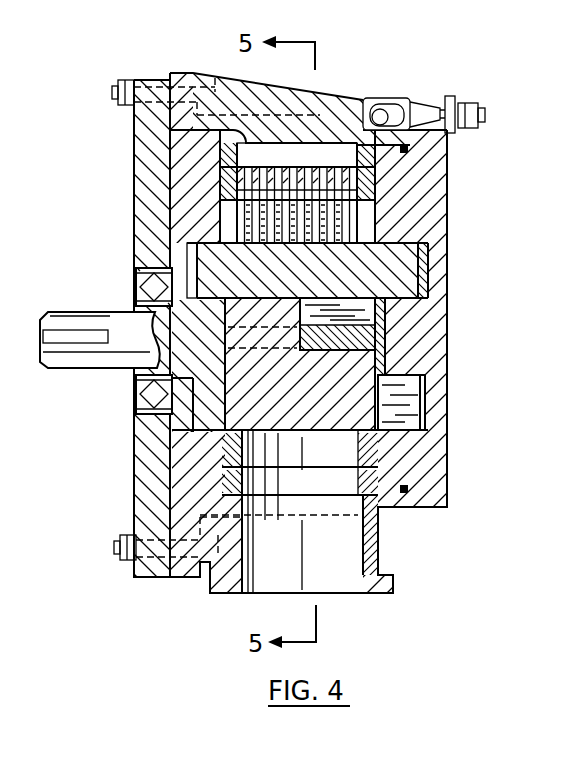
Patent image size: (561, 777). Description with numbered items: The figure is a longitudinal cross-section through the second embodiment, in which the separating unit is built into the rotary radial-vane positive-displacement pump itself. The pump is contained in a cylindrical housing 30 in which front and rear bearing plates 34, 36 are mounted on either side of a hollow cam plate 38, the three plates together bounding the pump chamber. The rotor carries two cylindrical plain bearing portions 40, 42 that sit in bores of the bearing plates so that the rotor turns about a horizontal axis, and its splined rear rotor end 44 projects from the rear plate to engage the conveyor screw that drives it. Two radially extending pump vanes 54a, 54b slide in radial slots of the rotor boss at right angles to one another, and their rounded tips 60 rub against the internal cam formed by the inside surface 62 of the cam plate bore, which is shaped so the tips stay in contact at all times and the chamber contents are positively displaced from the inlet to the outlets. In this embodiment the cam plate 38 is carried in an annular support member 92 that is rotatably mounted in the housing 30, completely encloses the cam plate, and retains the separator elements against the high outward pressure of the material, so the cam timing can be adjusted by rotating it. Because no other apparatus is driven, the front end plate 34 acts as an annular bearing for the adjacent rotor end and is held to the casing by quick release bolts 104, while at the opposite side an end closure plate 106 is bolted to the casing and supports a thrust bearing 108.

The cylindrical housing 30 is at (350, 98).
The front bearing plate 34 is at (425, 218).
The rear bearing plate 36 is at (185, 186).
The hollow cam plate 38 is at (375, 180).
The cylindrical plain bearing portion 40 is at (405, 268).
The cylindrical plain bearing portion 42 is at (172, 432).
The rear rotor end 44 is at (84, 318).
The pump vane 54a is at (382, 372).
The pump vane 54b is at (388, 344).
The blade tips 60 is at (320, 436).
The inside surface of cam plate bore 62 is at (390, 450).
The annular support member 92 is at (297, 319).
The quick release bolts 104 is at (470, 128).
The end closure plate 106 is at (152, 483).
The thrust bearing 108 is at (138, 378).